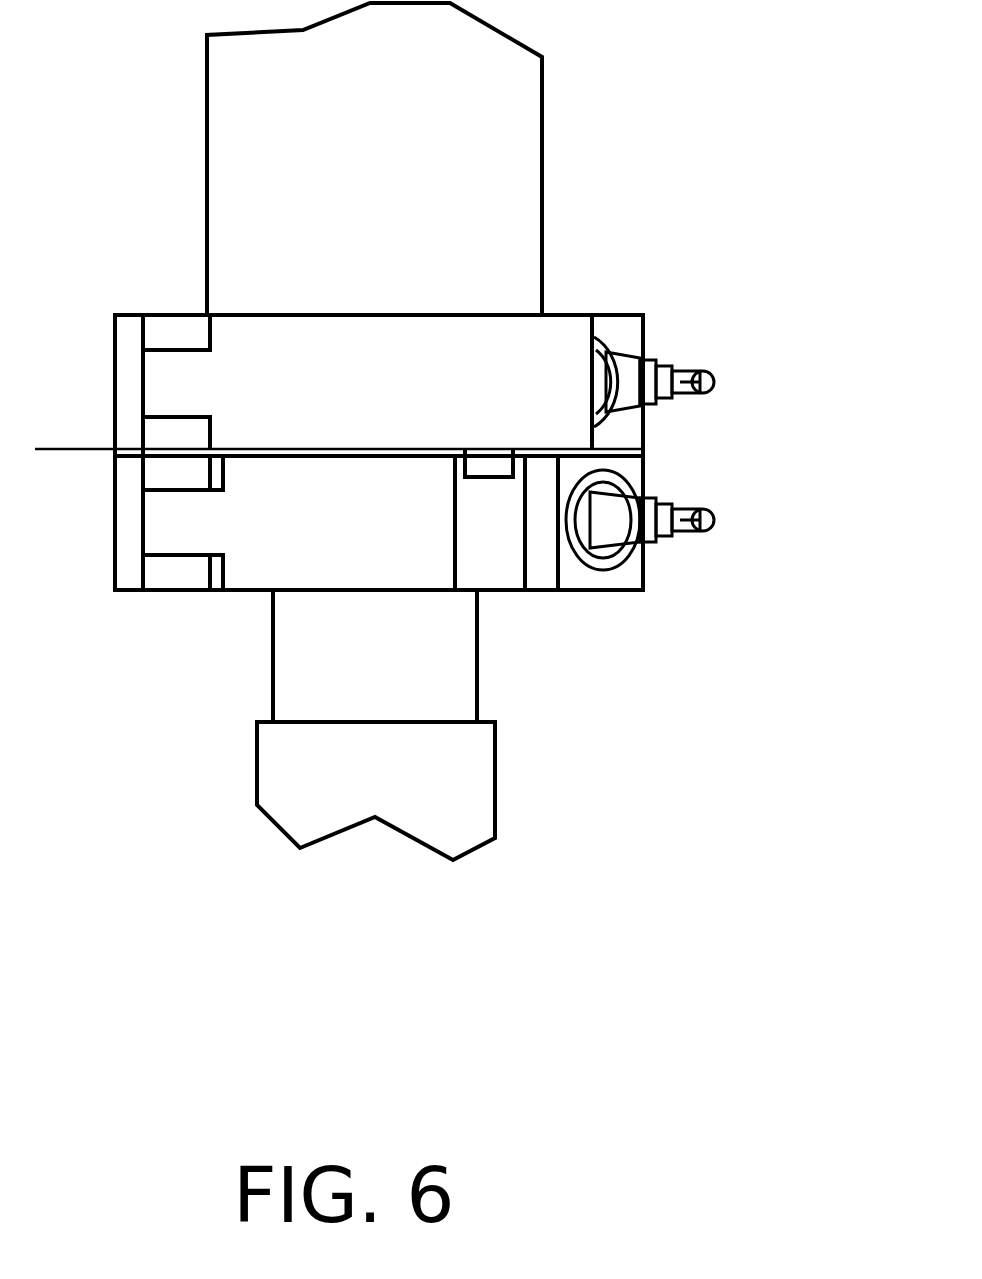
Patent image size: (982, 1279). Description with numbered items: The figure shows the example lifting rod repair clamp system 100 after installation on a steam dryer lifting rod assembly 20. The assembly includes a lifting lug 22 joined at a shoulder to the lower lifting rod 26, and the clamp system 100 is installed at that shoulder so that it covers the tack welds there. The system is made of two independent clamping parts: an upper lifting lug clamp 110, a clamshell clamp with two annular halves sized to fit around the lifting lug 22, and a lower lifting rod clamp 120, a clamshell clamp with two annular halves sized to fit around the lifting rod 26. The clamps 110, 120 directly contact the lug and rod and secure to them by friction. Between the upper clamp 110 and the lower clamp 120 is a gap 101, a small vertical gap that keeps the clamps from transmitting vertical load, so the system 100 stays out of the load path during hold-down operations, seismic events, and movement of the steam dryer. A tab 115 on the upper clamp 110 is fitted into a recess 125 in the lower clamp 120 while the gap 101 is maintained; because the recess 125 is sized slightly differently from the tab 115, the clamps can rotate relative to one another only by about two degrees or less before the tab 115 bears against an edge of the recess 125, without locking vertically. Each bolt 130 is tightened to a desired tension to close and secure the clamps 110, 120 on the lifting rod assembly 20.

The lifting rod assembly 20 is at (338, 783).
The lifting lug 22 is at (485, 150).
The lifting rod 26 is at (447, 697).
The lifting rod repair clamp system 100 is at (339, 449).
The gap 101 is at (62, 517).
The upper lifting lug clamp 110 is at (175, 385).
The tab 115 is at (490, 462).
The lower lifting rod clamp 120 is at (288, 528).
The recess 125 is at (492, 490).
The bolt 130 is at (658, 520).